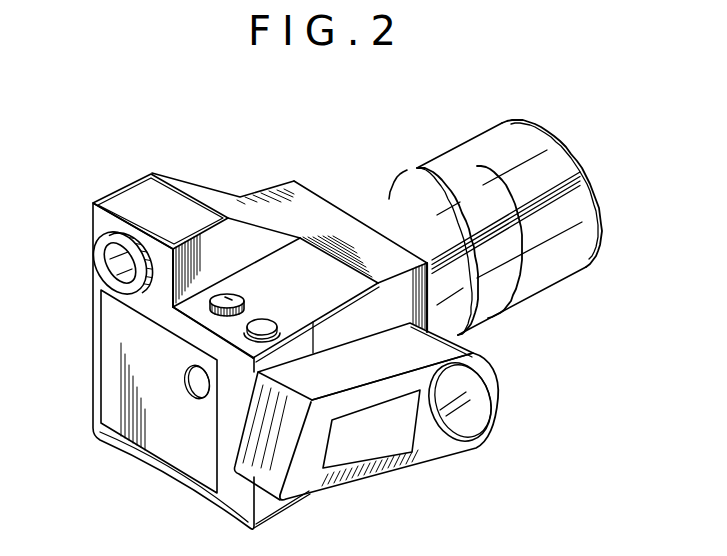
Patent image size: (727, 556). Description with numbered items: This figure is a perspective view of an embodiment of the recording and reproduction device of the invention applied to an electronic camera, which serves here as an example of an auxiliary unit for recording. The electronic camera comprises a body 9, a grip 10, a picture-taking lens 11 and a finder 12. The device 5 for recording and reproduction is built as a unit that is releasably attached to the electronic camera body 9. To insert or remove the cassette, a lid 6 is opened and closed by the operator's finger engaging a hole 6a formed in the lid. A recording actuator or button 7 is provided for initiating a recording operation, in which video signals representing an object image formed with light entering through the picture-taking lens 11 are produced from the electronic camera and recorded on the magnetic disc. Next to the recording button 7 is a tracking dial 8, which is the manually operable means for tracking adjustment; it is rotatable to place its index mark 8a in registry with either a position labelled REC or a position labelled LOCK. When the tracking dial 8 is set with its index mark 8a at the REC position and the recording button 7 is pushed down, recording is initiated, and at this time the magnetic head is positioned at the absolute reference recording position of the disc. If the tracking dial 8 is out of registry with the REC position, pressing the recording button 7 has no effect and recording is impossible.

The device for recording and reproduction 5 is at (270, 510).
The lid 6 is at (173, 456).
The hole 6a is at (197, 394).
The recording button 7 is at (266, 322).
The tracking dial 8 is at (217, 298).
The index mark 8a is at (225, 299).
The body 9 is at (333, 212).
The grip 10 is at (408, 440).
The picture-taking lens 11 is at (555, 272).
The finder 12 is at (112, 255).